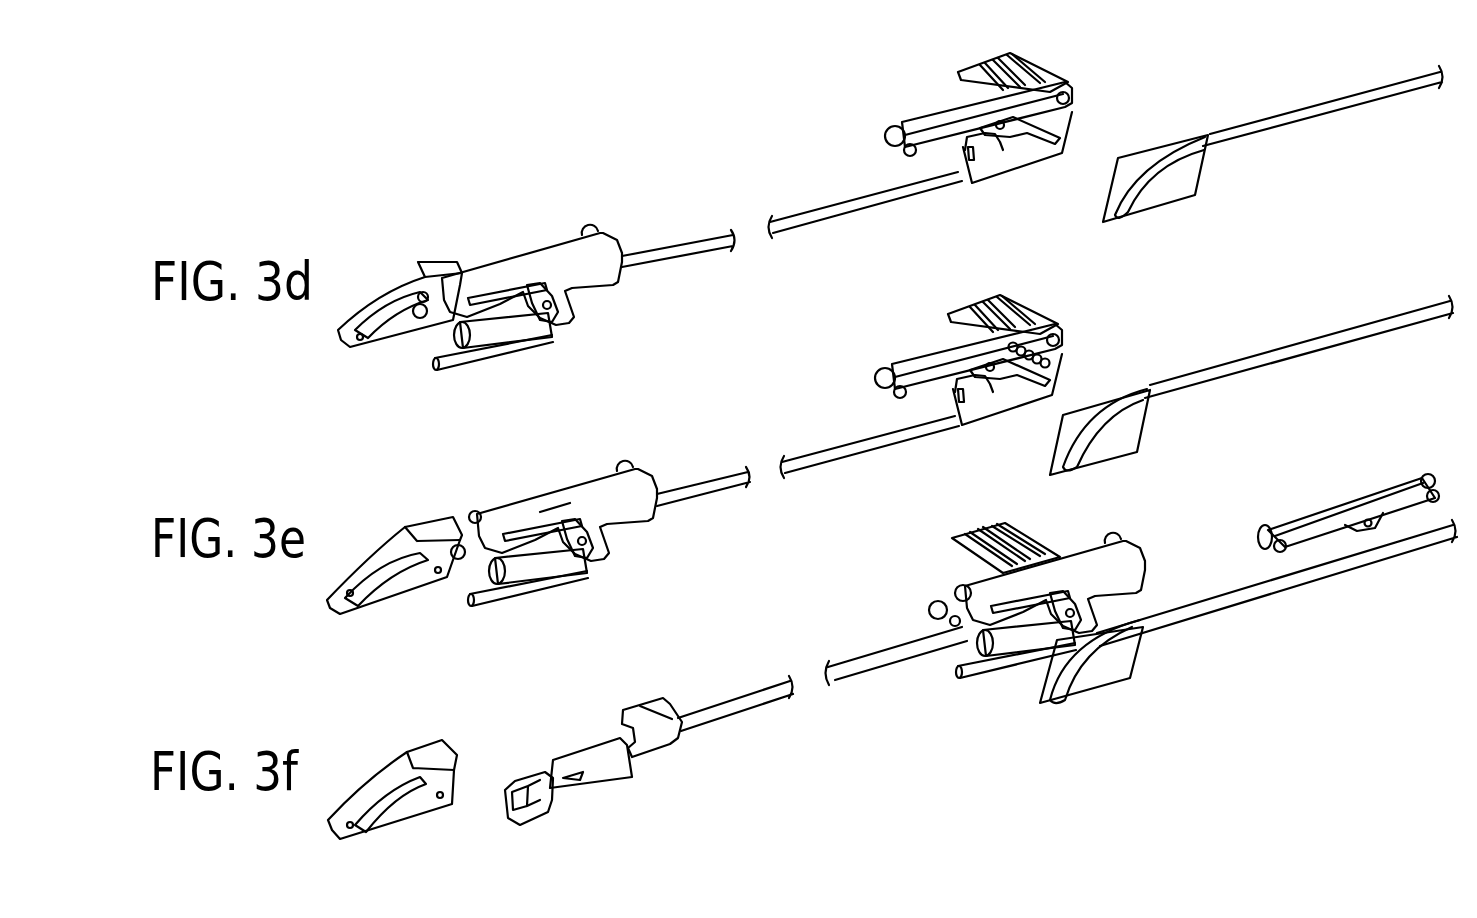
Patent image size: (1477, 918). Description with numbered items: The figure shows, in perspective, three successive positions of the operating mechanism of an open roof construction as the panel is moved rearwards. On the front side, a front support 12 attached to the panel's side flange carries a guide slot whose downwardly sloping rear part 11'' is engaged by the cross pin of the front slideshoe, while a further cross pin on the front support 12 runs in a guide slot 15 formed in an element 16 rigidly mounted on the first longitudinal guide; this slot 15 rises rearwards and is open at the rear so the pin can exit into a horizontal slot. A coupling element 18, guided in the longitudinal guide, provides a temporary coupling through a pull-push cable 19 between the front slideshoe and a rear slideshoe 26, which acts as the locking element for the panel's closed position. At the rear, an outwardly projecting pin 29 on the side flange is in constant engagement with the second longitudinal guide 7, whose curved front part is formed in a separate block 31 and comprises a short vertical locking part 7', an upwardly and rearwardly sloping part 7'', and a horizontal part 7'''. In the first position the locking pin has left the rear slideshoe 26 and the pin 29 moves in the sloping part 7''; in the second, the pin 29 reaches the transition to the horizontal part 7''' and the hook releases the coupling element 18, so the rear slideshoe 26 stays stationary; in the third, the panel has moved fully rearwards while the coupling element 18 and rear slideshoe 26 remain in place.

In FIG. 3F, the second longitudinal guide 7 is at (1277, 584).
In FIG. 3F, the vertical locking part 7' is at (1095, 671).
In FIG. 3D, the sloping part 7'' is at (1279, 142).
In FIG. 3E, the sloping part 7'' is at (1134, 430).
In FIG. 3E, the horizontal part 7''' is at (1299, 360).
In FIG. 3E, the downwardly sloping rear part 11'' is at (536, 492).
In FIG. 3E, the front support 12 is at (632, 475).
In FIG. 3F, the front support 12 is at (982, 602).
In FIG. 3D, the guide slot 15 is at (391, 322).
In FIG. 3F, the element 16 is at (410, 798).
In FIG. 3F, the coupling element 18 is at (613, 765).
In FIG. 3F, the pull-push cable 19 is at (862, 672).
In FIG. 3E, the rear slideshoe 26 is at (1007, 402).
In FIG. 3D, the projecting pin 29 is at (1150, 167).
In FIG. 3E, the projecting pin 29 is at (1143, 390).
In FIG. 3F, the block 31 is at (1117, 660).